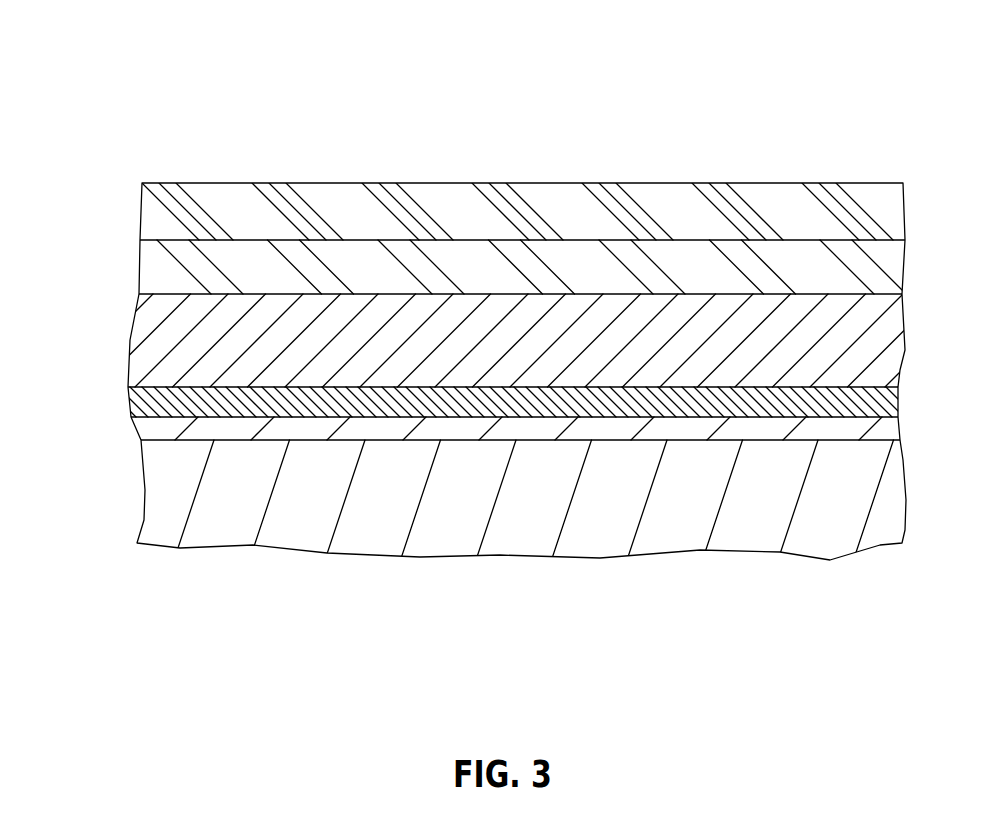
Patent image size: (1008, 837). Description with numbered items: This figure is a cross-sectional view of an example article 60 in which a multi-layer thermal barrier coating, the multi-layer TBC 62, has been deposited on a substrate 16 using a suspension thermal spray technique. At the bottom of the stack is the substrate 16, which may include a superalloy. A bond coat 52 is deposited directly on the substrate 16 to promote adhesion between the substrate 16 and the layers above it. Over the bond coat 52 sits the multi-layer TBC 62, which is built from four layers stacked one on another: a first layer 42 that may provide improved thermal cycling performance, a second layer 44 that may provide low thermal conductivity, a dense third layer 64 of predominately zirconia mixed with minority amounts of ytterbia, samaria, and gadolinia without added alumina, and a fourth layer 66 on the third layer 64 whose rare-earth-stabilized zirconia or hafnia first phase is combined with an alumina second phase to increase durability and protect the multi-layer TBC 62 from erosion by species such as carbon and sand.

The semiconductor device 60 is at (118, 53).
The multi-layer TBC 62 is at (97, 183).
The fourth layer 66 is at (180, 212).
The third layer 64 is at (175, 268).
The second layer 44 is at (168, 343).
The first layer 42 is at (169, 407).
The bond coat 52 is at (175, 432).
The substrate 16 is at (188, 496).